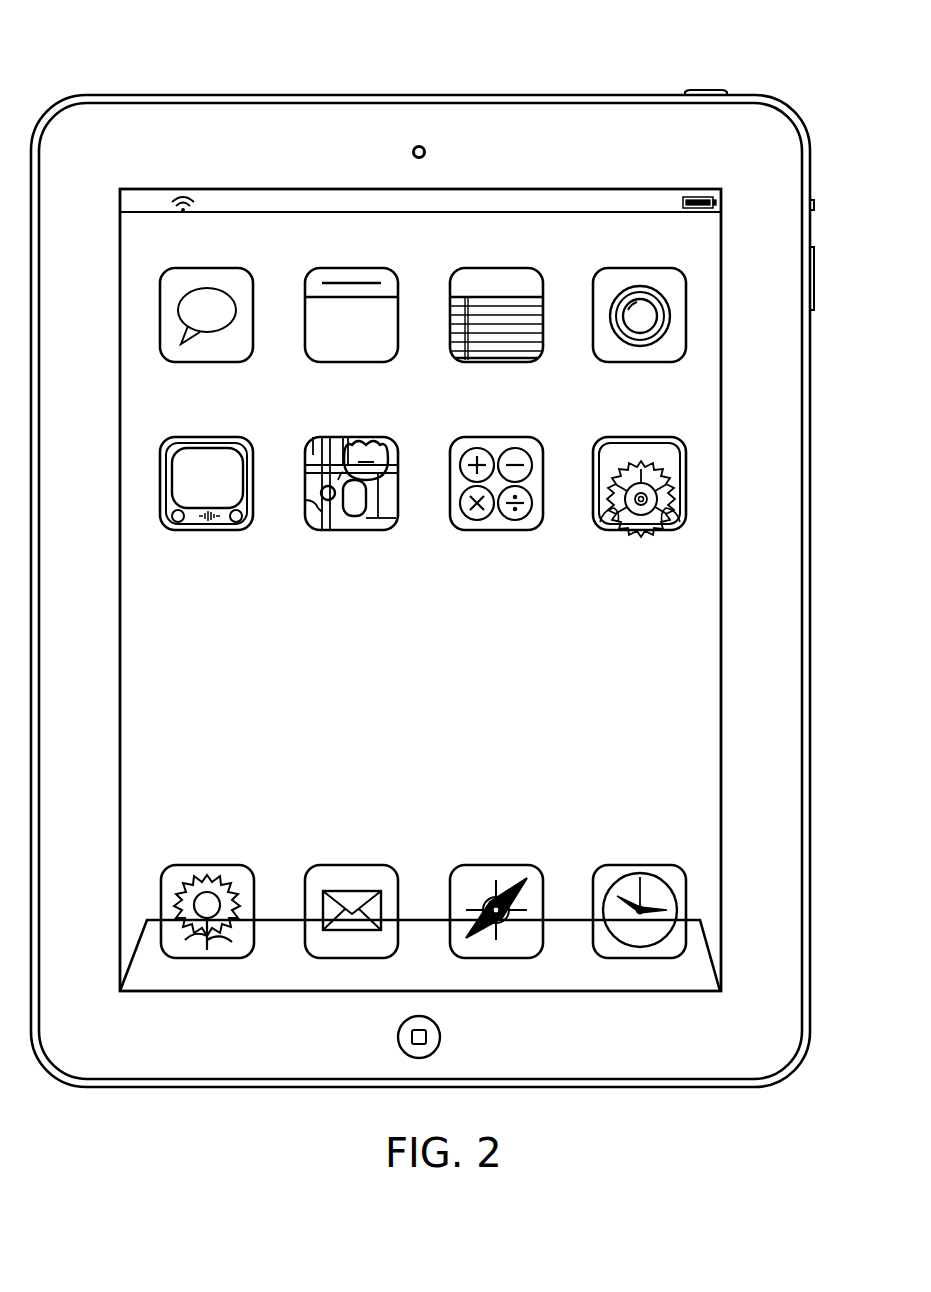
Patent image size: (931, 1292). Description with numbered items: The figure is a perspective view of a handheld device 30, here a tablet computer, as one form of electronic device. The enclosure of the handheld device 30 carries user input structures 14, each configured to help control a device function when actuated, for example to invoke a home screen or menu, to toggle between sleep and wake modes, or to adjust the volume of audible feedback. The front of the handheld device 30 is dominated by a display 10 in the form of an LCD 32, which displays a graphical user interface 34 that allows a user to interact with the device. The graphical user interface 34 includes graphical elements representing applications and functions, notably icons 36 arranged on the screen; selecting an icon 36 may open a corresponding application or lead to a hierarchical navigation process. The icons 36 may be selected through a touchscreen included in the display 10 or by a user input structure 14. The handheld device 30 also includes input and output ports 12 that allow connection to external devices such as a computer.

The display 10 is at (692, 675).
The input and output (I/O) port 12 is at (135, 94).
The user input structure 14 is at (706, 93).
The handheld device 30 is at (312, 40).
The LCD 32 is at (712, 612).
The graphical user interface (GUI) 34 is at (166, 648).
The icon 36 is at (350, 268).